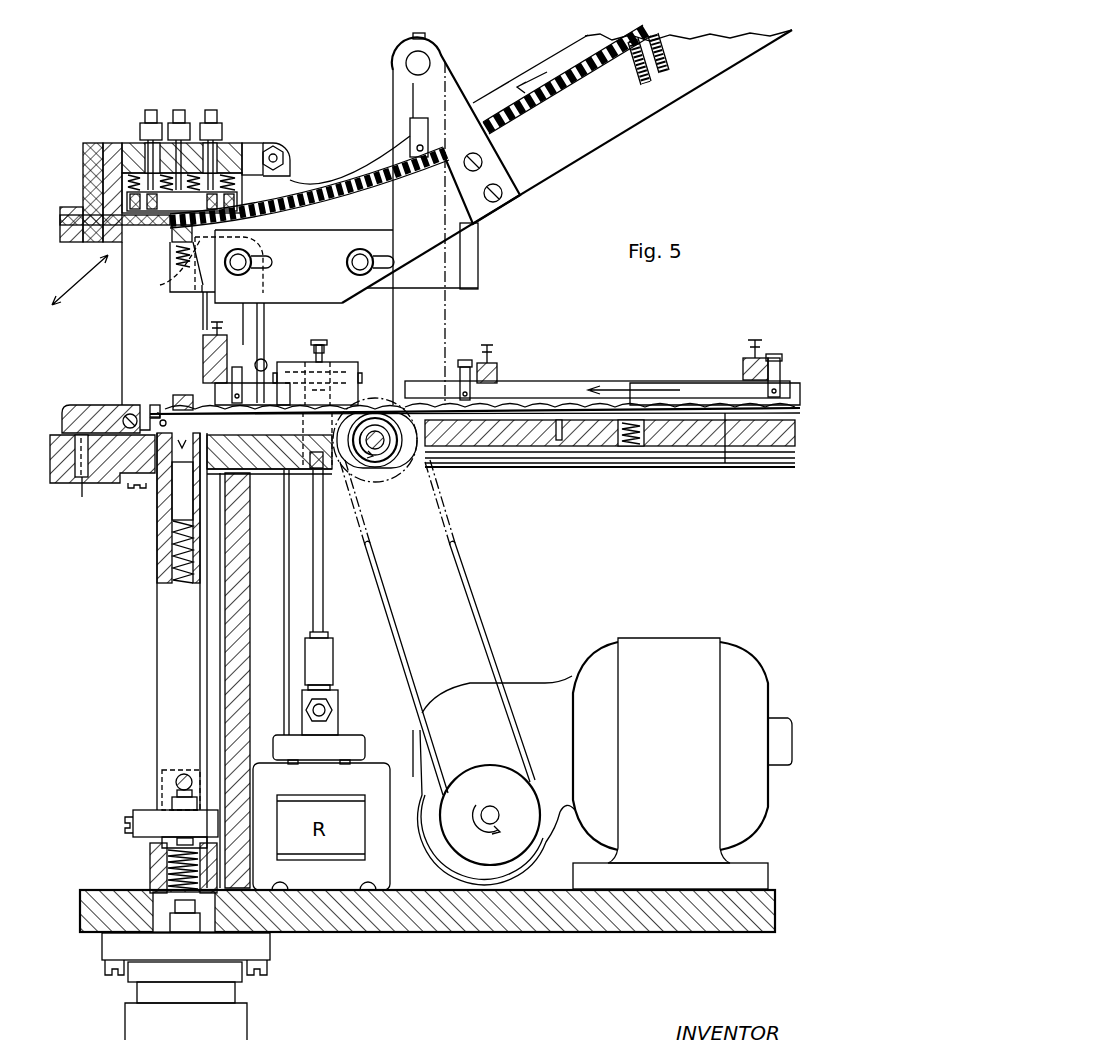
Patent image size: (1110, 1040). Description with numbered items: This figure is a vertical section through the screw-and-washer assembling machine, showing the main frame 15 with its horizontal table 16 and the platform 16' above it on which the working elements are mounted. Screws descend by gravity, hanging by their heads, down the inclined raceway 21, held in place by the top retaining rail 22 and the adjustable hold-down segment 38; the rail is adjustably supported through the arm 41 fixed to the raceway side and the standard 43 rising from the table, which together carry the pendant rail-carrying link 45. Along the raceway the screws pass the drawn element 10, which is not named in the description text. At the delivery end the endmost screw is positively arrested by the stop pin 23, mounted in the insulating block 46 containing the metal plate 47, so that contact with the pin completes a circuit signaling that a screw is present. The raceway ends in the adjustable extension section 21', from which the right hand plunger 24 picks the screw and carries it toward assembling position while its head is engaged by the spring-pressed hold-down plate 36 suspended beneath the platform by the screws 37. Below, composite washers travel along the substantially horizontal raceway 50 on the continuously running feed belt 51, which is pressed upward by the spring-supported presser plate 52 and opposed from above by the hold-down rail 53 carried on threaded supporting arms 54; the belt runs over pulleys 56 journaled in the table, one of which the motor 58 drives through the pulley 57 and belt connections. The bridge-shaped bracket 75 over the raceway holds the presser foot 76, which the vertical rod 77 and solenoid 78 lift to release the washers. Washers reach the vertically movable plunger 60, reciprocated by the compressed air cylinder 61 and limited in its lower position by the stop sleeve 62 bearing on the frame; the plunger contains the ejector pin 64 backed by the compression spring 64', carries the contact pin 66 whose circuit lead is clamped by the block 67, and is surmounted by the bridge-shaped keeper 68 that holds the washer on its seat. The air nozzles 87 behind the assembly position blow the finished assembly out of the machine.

The chain 10 is at (305, 208).
The main frame 15 is at (535, 917).
The horizontal table 16 is at (95, 468).
The platform 16' is at (169, 131).
The raceway 21 is at (567, 166).
The extension section 21' is at (445, 256).
The top retaining rail 22 is at (520, 82).
The stop pin 23 is at (130, 226).
The right hand plunger 24 is at (173, 240).
The hold-down plate 36 is at (193, 213).
The screws 37 is at (215, 118).
The hold-down segment 38 is at (350, 182).
The arm 41 is at (504, 168).
The standard 43 is at (446, 312).
The rail-carrying link 45 is at (410, 128).
The block 46 is at (86, 148).
The metal plate 47 is at (86, 162).
The raceway 50 is at (695, 440).
The feed belt 51 is at (708, 465).
The presser plate 52 is at (516, 420).
The hold-down rail 53 is at (538, 381).
The threaded supporting arms 54 is at (237, 360).
The pulleys 56 is at (380, 462).
The pulley 57 is at (502, 796).
The motor 58 is at (679, 674).
The plunger 60 is at (193, 692).
The compressed air cylinder 61 is at (125, 1024).
The stop sleeve 62 is at (155, 878).
The ejector pin 64 is at (182, 480).
The compression spring 64' is at (150, 552).
The contact pin 66 is at (152, 405).
The block 67 is at (92, 405).
The keeper 68 is at (182, 395).
The bracket 75 is at (342, 362).
The presser foot 76 is at (342, 392).
The vertical rod 77 is at (320, 604).
The solenoid 78 is at (329, 761).
The air nozzles 87 is at (160, 286).